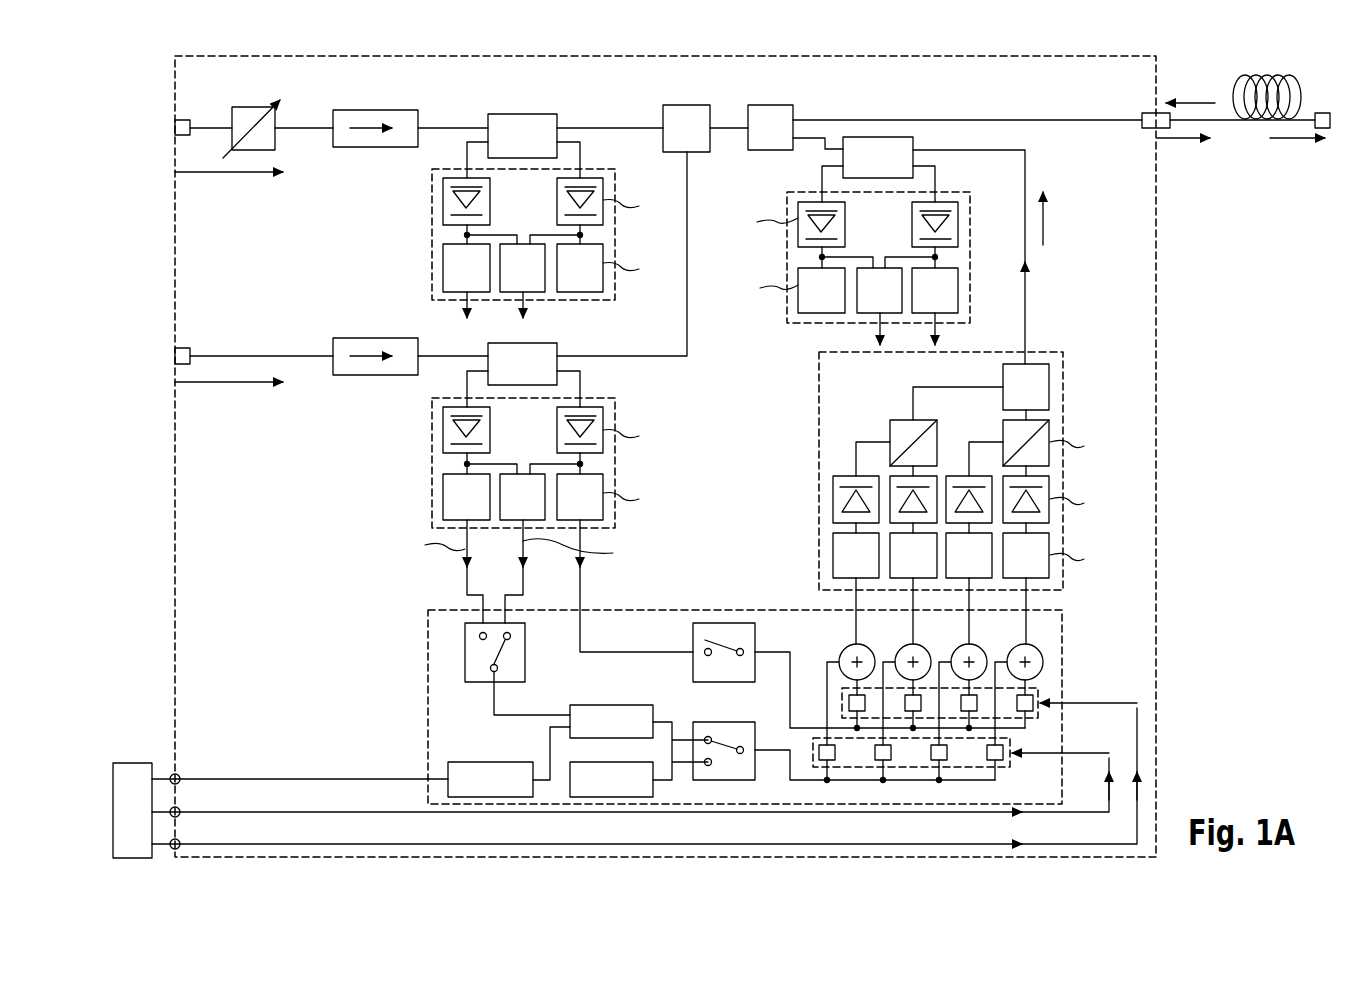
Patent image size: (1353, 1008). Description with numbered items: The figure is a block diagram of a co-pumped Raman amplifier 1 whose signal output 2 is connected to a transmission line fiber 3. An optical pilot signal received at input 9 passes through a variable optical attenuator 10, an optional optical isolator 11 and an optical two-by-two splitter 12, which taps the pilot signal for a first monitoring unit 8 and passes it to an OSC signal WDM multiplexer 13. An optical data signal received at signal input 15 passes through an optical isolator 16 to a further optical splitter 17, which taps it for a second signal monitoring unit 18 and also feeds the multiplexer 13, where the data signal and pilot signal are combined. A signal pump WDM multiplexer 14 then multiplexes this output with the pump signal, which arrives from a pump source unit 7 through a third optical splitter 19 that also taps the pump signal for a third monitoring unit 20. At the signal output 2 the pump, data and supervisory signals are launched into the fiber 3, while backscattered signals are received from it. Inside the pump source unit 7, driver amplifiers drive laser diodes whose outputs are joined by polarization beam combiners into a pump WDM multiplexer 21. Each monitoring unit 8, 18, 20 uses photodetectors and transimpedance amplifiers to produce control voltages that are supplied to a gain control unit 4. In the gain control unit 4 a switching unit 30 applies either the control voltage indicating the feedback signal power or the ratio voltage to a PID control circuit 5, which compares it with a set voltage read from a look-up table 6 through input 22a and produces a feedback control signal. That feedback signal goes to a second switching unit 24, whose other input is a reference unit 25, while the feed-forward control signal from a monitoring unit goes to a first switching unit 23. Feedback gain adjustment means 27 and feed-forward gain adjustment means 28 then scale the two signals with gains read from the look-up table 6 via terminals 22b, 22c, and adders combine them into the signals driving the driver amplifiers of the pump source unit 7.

The pumped Raman amplifier 1 is at (1157, 345).
The signal output 2 is at (1146, 128).
The transmission line fiber 3 is at (1298, 92).
The gain control unit 4 is at (756, 707).
The PID control circuit 5 is at (568, 712).
The look-up table 6 is at (133, 763).
The pump source unit 7 is at (944, 498).
The first monitoring unit 8 is at (432, 258).
The input 9 is at (173, 129).
The variable optical attenuator 10 is at (278, 148).
The optical isolator 11 is at (376, 147).
The optical two-by-two splitter 12 is at (560, 122).
The OSC signal WDM multiplexer 13 is at (720, 114).
The signal pump WDM multiplexer 14 is at (795, 113).
The signal input 15 is at (173, 358).
The optical isolator 16 is at (376, 375).
The optical splitter 17 is at (560, 350).
The second signal monitoring unit 18 is at (432, 486).
The third optical splitter 19 is at (882, 135).
The third monitoring unit 20 is at (787, 210).
The pump WDM multiplexer 21 is at (1050, 385).
The input 22a is at (183, 775).
The terminal 22b is at (183, 808).
The terminal 22c is at (183, 840).
The first switching unit 23 is at (757, 636).
The second switching unit 24 is at (740, 716).
The reference unit 25 is at (651, 773).
The feedback gain adjustment means 27 is at (1012, 742).
The feed-forward gain adjustment means 28 is at (1040, 700).
The switching unit 30 is at (525, 655).